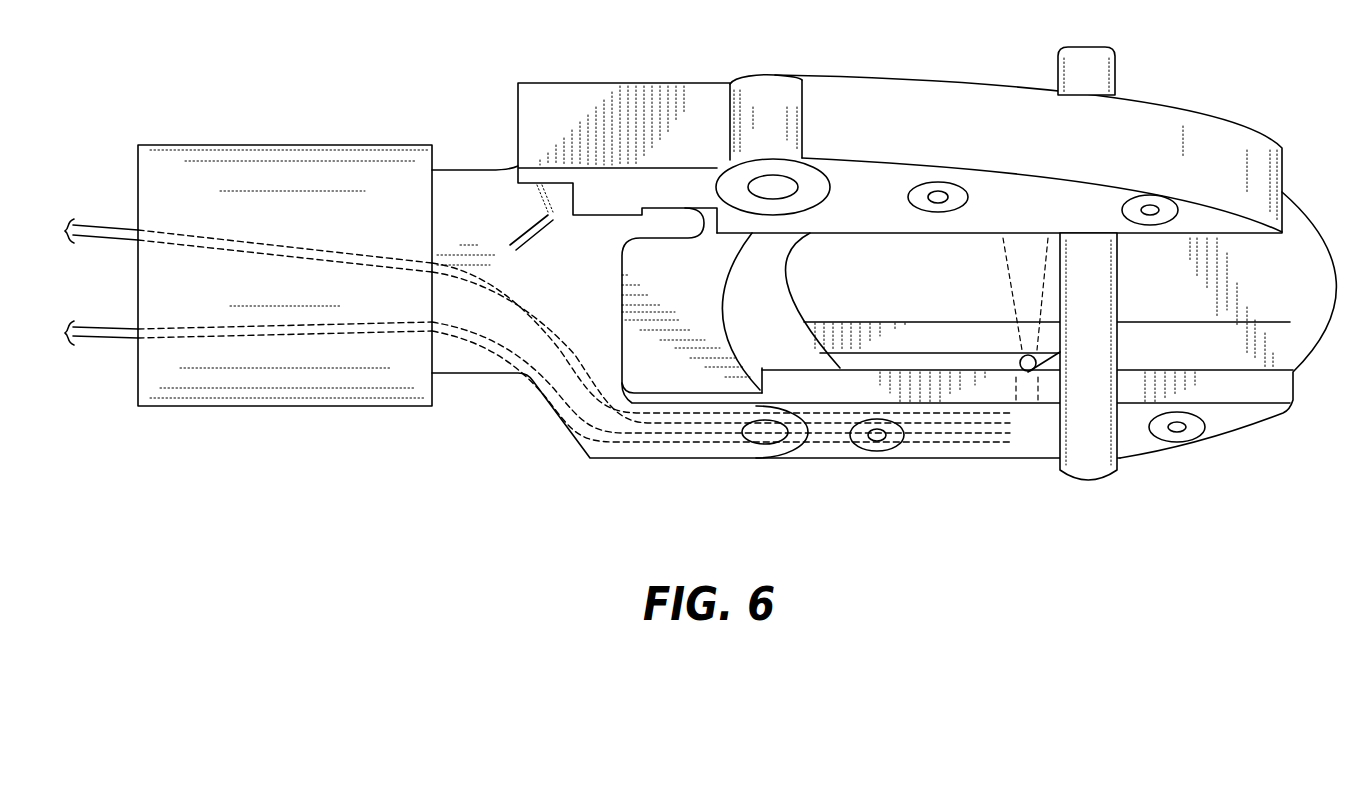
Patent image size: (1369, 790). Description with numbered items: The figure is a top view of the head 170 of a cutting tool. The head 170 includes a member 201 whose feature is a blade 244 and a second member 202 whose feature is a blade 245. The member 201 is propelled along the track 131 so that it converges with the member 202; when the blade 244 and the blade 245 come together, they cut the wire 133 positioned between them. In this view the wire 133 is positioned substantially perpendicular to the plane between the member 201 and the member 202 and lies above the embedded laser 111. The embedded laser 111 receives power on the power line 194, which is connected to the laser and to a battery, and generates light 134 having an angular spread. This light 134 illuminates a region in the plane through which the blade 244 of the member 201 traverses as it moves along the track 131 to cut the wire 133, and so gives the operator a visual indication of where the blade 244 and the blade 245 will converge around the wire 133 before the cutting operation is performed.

The power line 194 is at (110, 226).
The head 170 is at (521, 465).
The track 131 is at (848, 363).
The blade 244 is at (787, 306).
The member 201 is at (779, 298).
The member 202 is at (1216, 361).
The blade 245 is at (1120, 322).
The wire 133 is at (1088, 484).
The light 134 is at (1047, 330).
The embedded laser 111 is at (1028, 378).